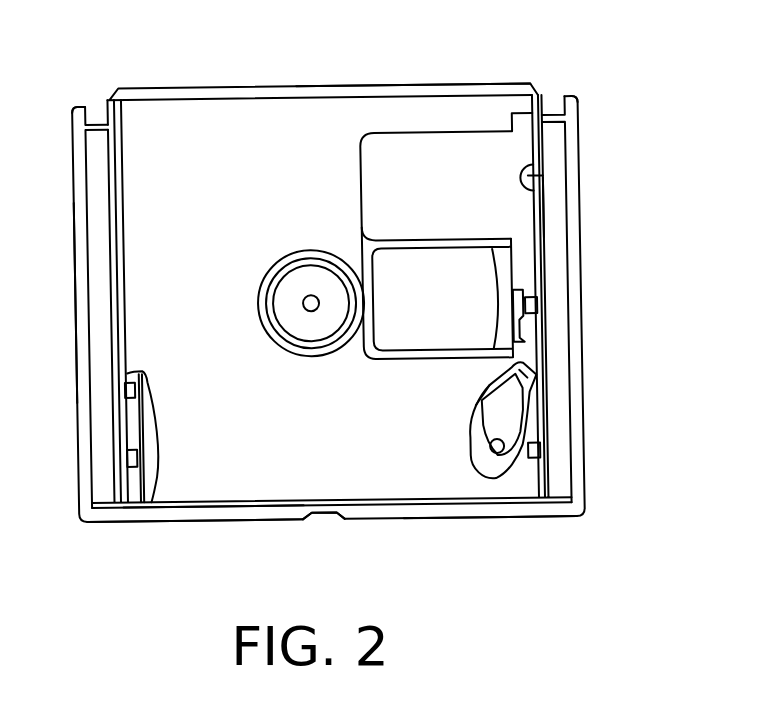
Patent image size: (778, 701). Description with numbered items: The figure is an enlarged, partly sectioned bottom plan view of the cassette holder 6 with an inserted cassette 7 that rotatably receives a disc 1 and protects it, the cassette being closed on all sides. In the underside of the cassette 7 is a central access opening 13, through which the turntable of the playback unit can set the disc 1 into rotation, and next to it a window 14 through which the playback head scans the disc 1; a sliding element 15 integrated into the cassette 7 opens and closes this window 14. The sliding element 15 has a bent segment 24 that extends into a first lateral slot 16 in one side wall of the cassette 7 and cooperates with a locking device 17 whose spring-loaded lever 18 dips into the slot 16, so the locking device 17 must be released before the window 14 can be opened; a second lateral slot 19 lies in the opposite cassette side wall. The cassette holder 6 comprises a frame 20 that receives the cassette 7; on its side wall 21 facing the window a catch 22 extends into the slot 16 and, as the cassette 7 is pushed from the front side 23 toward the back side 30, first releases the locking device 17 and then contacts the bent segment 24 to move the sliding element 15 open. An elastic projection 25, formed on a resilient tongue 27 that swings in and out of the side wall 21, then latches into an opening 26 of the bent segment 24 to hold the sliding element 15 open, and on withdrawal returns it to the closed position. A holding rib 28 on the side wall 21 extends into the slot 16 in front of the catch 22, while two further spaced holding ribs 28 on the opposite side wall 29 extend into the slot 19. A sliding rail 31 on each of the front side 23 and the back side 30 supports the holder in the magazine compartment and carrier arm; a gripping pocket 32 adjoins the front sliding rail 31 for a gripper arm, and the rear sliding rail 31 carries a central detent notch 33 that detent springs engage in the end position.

The disc 1 is at (410, 340).
The cassette holder 6 is at (60, 307).
The cassette 7 is at (193, 117).
The central access opening 13 is at (270, 345).
The window 14 is at (367, 362).
The sliding element 15 is at (400, 153).
The first lateral slot 16 is at (536, 355).
The locking device 17 is at (448, 430).
The spring-loaded lever 18 is at (537, 393).
The second lateral slot 19 is at (128, 487).
The frame 20 is at (85, 428).
The side wall 21 is at (537, 288).
The catch 22 is at (533, 307).
The front side 23 is at (258, 72).
The bent segment 24 is at (542, 261).
The elastic projection 25 is at (530, 177).
The opening 26 is at (535, 162).
The resilient tongue 27 is at (543, 205).
The holding ribs 28 is at (540, 450).
The side wall 29 is at (110, 222).
The back side 30 is at (218, 545).
The sliding rail 31 is at (461, 88).
The gripping pocket 32 is at (97, 110).
The detent notch 33 is at (332, 514).